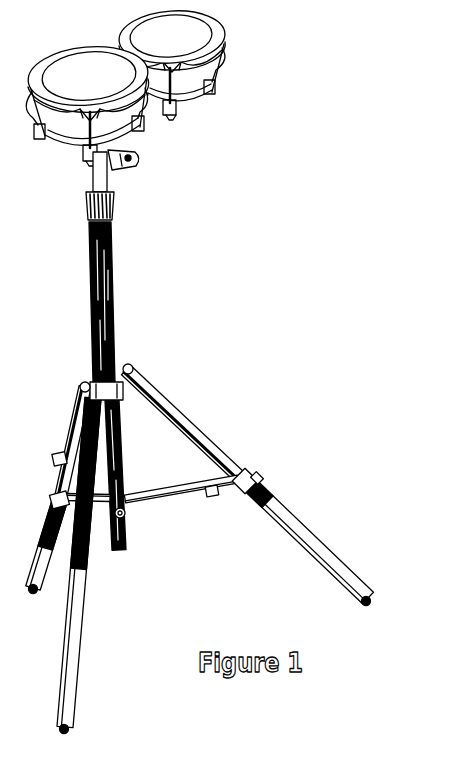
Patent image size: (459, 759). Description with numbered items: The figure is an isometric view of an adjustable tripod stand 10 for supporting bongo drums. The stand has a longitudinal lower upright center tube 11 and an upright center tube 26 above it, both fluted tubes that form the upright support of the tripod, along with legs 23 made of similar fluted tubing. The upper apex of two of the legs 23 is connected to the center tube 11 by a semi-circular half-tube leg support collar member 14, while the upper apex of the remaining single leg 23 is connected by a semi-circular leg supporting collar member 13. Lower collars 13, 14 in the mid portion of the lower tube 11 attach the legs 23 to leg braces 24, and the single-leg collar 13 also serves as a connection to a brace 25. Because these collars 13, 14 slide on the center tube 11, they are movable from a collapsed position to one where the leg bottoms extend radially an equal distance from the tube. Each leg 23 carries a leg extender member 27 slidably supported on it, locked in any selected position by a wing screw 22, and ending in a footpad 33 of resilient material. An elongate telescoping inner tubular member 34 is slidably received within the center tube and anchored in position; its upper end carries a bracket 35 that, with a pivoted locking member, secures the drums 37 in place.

The adjustable tripod stand 10 is at (211, 482).
The lower upright center tube 11 is at (123, 458).
The semi-circular leg supporting collar member 13 is at (137, 377).
The semi-circular leg support collar member 14 is at (116, 396).
The wing screw 22 is at (265, 480).
The leg 23 is at (163, 392).
The leg brace 24 is at (211, 492).
The brace 25 is at (182, 498).
The longitudinal upright center tube 26 is at (112, 273).
The leg extender member 27 is at (333, 548).
The footpad 33 is at (362, 605).
The telescoping inner tubular member 34 is at (97, 183).
The bracket 35 is at (137, 160).
The drums 37 is at (67, 70).